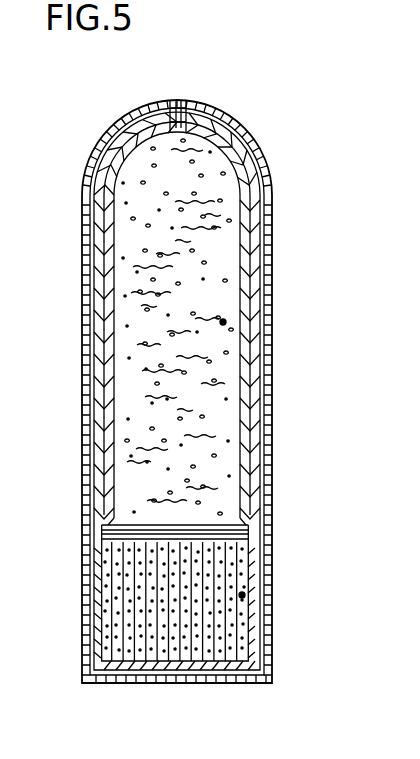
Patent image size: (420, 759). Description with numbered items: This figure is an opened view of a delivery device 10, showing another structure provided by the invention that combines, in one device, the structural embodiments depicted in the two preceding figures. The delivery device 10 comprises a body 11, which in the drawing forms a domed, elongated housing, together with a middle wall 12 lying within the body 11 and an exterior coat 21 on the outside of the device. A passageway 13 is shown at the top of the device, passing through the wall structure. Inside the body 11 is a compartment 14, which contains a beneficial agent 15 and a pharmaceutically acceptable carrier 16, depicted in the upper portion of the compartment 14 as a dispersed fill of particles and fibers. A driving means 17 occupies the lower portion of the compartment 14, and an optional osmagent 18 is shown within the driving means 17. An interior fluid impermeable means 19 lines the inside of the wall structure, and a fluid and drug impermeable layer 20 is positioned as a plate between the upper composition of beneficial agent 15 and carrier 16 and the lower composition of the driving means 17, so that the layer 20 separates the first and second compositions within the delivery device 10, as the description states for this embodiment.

The delivery device 10 is at (207, 358).
The body 11 is at (273, 172).
The middle wall 12 is at (253, 213).
The passageway 13 is at (182, 101).
The compartment 14 is at (223, 274).
The beneficial agent 15 is at (224, 321).
The pharmaceutically acceptable carrier 16 is at (197, 357).
The driving means 17 is at (225, 572).
The optional osmagent 18 is at (243, 593).
The interior fluid impermeable means 19 is at (247, 238).
The fluid and drug impermeable layer 20 is at (212, 524).
The exterior coat 21 is at (273, 385).